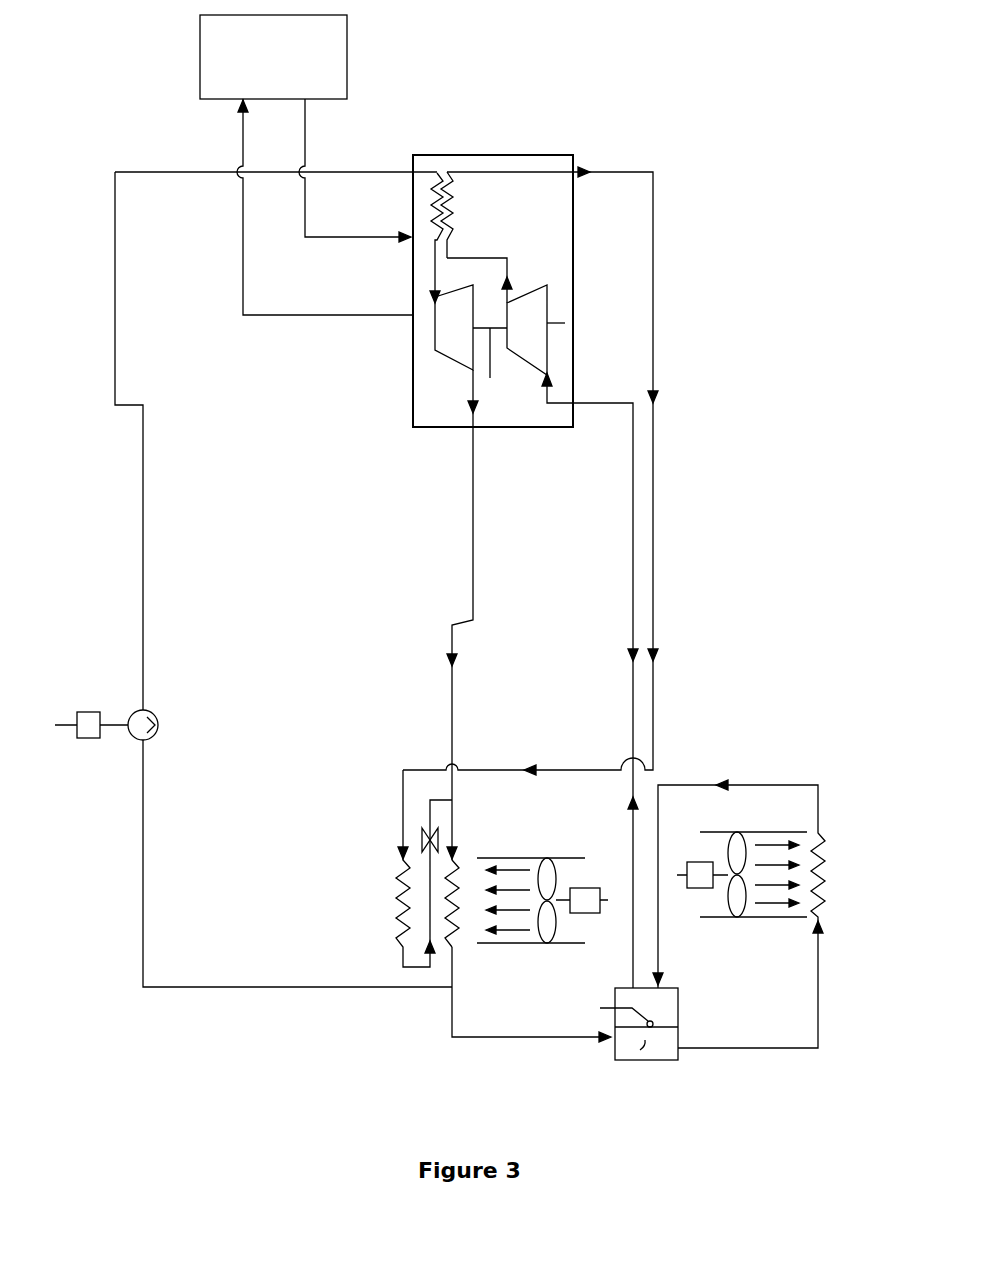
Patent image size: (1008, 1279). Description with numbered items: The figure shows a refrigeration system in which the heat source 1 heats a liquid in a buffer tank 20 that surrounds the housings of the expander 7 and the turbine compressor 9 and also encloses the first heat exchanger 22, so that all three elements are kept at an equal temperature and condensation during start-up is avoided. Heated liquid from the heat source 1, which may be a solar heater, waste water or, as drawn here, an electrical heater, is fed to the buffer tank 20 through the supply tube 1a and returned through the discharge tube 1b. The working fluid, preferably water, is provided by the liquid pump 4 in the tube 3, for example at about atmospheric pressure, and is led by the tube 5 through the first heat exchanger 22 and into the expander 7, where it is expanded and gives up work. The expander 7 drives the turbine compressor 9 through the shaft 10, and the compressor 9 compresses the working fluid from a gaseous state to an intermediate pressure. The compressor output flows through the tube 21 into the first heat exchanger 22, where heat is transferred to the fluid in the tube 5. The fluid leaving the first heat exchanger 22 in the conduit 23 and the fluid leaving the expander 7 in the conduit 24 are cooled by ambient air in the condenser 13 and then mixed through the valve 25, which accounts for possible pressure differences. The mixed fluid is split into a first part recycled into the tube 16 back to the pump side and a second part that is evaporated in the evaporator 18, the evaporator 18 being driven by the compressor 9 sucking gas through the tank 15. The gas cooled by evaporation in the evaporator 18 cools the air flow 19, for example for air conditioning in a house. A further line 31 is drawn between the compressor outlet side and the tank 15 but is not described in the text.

The heat source 1 is at (200, 47).
The supply tube 1a is at (338, 240).
The discharge tube 1b is at (313, 317).
The tube 3 is at (146, 553).
The liquid pump 4 is at (152, 720).
The tube 5 is at (357, 170).
The expander 7 is at (435, 330).
The turbine compressor 9 is at (565, 323).
The shaft 10 is at (482, 325).
The condenser 13 is at (537, 853).
The tank 15 is at (645, 1055).
The tube 16 is at (143, 875).
The evaporator 18 is at (837, 832).
The air flow 19 is at (763, 855).
The buffer tank 20 is at (563, 152).
The tube 21 is at (478, 258).
The first heat exchanger 22 is at (462, 212).
The conduit 23 is at (656, 528).
The conduit 24 is at (473, 550).
The valve 25 is at (433, 840).
The line 31 is at (632, 545).